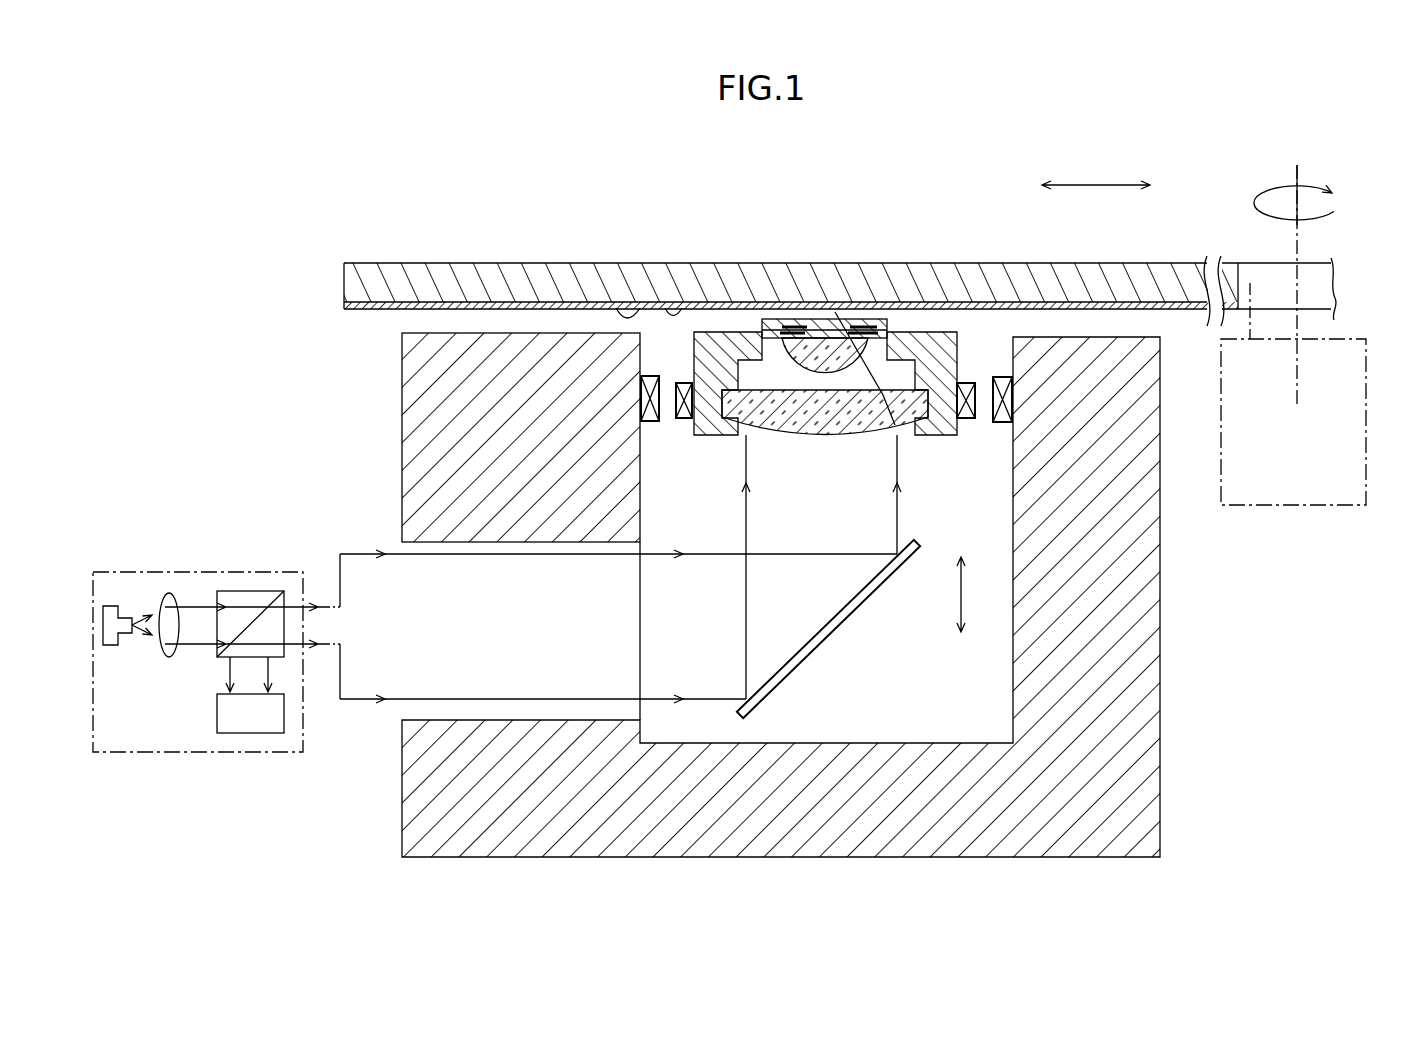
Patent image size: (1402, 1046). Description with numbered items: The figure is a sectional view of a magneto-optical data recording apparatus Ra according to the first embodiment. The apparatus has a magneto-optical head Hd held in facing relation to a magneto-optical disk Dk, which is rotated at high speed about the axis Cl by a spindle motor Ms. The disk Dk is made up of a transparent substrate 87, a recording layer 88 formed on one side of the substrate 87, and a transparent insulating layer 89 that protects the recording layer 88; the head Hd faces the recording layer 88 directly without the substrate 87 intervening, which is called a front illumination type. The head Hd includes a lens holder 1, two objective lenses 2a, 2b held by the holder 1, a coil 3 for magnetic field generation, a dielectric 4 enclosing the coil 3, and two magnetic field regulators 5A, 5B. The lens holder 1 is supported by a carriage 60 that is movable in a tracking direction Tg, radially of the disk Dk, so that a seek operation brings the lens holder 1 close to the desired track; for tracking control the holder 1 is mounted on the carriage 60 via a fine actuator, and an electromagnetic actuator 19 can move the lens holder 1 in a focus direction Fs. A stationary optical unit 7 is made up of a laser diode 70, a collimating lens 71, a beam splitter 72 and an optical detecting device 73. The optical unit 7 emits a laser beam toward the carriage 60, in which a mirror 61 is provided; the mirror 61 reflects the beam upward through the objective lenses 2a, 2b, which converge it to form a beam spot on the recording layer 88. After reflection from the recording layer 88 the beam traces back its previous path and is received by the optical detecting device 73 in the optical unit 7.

The lens holder 1 is at (700, 360).
The objective lens 2a is at (780, 416).
The objective lens 2b is at (827, 362).
The coil 3 is at (752, 423).
The dielectric 4 is at (880, 322).
The magnetic field regulator 5A is at (852, 326).
The magnetic field regulator 5B is at (872, 330).
The stationary optical unit 7 is at (242, 669).
The electromagnetic actuator 19 is at (686, 419).
The carriage 60 is at (430, 406).
The mirror 61 is at (862, 596).
The laser diode 70 is at (110, 606).
The collimating lens 71 is at (167, 592).
The beam splitter 72 is at (226, 591).
The optical detecting device 73 is at (217, 706).
The transparent substrate 87 is at (736, 300).
The recording layer 88 is at (622, 306).
The transparent insulating layer 89 is at (672, 306).
The magneto-optical disk Dk is at (564, 282).
The magneto-optical head Hd is at (928, 460).
The focus direction Fs is at (977, 594).
The tracking direction Tg is at (1096, 172).
The recording apparatus Ra is at (1199, 150).
The axis Cl is at (1297, 180).
The spindle motor Ms is at (1290, 503).